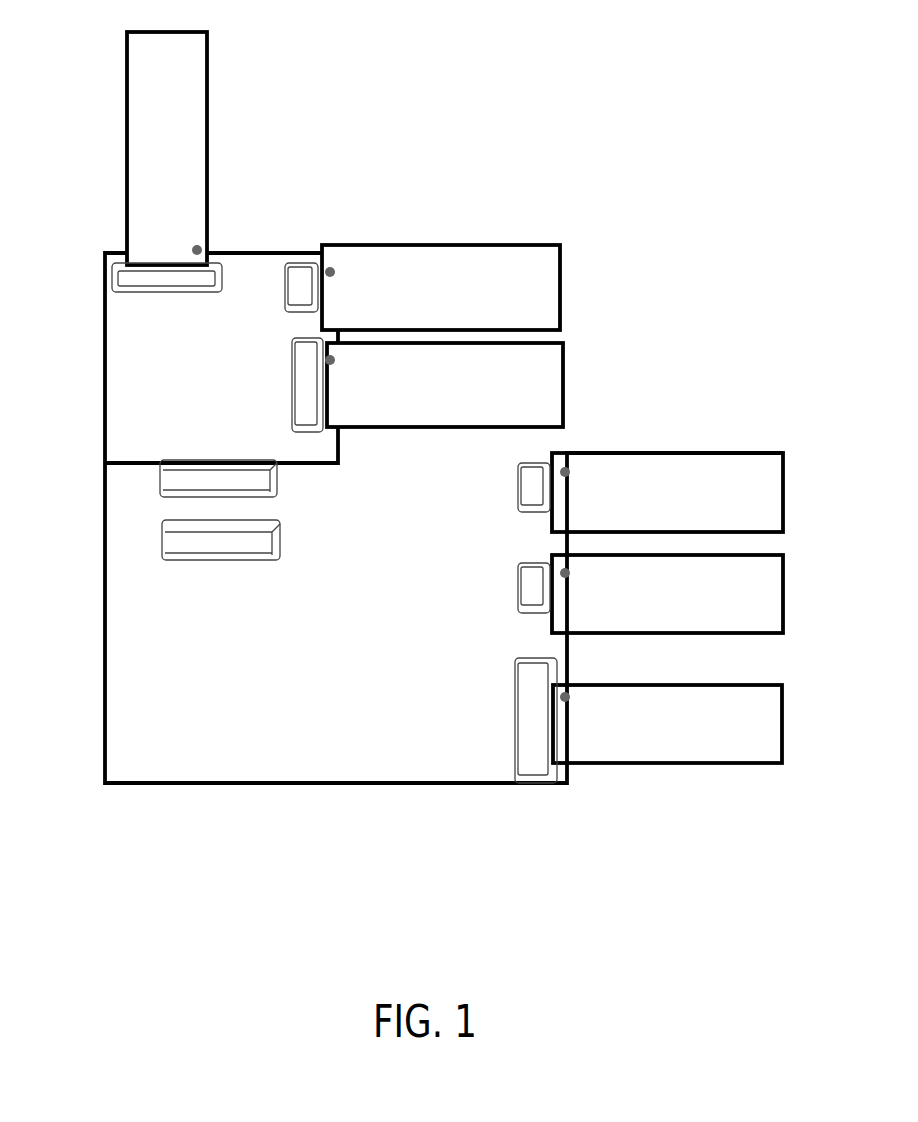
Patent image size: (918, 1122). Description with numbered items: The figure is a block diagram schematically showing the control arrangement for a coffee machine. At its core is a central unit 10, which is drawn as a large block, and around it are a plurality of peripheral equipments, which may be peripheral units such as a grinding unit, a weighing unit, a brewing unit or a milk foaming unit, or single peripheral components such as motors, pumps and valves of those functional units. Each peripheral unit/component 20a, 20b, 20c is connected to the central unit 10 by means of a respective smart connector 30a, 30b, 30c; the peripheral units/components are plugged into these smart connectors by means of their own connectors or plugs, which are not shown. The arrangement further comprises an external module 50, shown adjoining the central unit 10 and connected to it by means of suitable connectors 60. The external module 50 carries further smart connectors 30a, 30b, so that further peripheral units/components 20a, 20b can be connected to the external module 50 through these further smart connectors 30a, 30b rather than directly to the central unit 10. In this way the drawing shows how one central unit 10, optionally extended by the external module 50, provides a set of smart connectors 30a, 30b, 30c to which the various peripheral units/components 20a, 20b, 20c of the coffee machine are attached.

The central unit 10 is at (345, 652).
The peripheral unit/component 20a is at (187, 73).
The peripheral unit/component 20b is at (456, 298).
The peripheral unit/component 20c is at (700, 738).
The smart connector 30a is at (172, 283).
The smart connector 30b is at (300, 380).
The smart connector 30c is at (527, 718).
The external module 50 is at (208, 393).
The connectors 60 is at (180, 483).